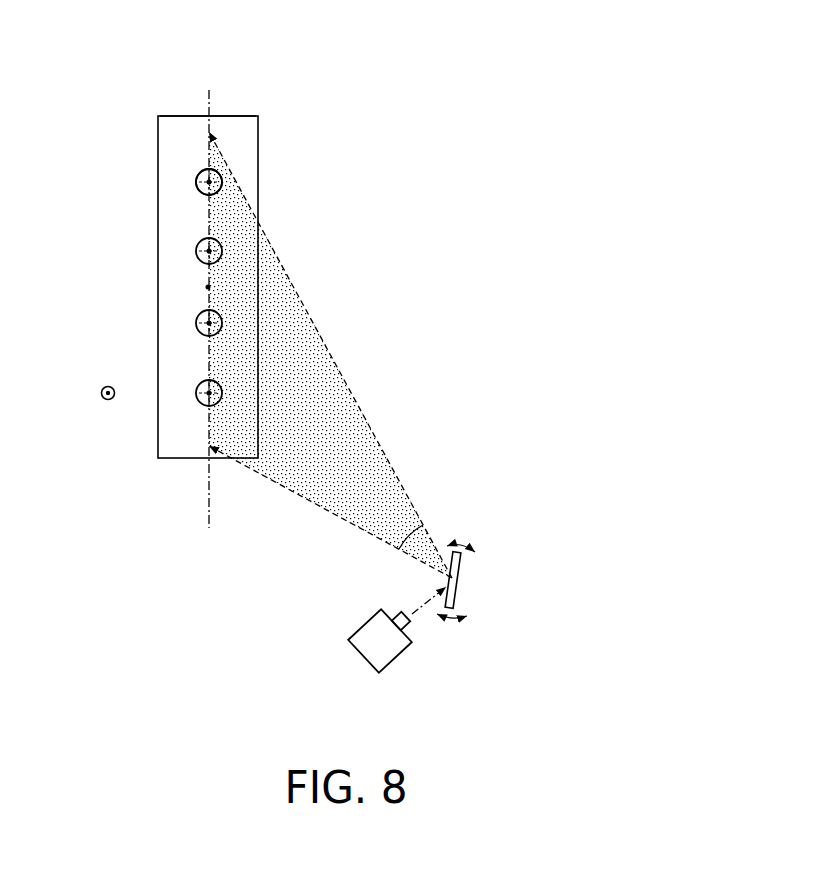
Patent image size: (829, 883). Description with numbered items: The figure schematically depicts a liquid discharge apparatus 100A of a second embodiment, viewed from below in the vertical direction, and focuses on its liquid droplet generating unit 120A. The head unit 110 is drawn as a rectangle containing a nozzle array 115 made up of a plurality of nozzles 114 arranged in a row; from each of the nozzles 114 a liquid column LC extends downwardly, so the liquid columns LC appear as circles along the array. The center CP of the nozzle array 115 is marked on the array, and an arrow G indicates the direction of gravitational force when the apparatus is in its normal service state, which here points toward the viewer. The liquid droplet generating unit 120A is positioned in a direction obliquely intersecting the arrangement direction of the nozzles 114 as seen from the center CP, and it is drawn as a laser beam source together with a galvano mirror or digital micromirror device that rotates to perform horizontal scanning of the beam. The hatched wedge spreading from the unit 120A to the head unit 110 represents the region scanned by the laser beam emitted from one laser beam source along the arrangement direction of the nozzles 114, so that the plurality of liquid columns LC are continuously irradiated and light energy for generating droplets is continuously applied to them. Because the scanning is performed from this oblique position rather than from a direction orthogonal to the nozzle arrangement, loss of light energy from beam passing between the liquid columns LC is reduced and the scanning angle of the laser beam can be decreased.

The liquid discharge apparatus 100A is at (654, 97).
The head unit 110 is at (229, 134).
The nozzle array 115 is at (240, 116).
The nozzles 114 is at (217, 171).
The liquid column LC is at (198, 191).
The light source center CX is at (211, 181).
The center of the nozzle array CP is at (206, 287).
The arrow representing direction of gravitational force G is at (98, 393).
The axis AX is at (212, 498).
The liquid droplet generating unit 120A is at (484, 603).